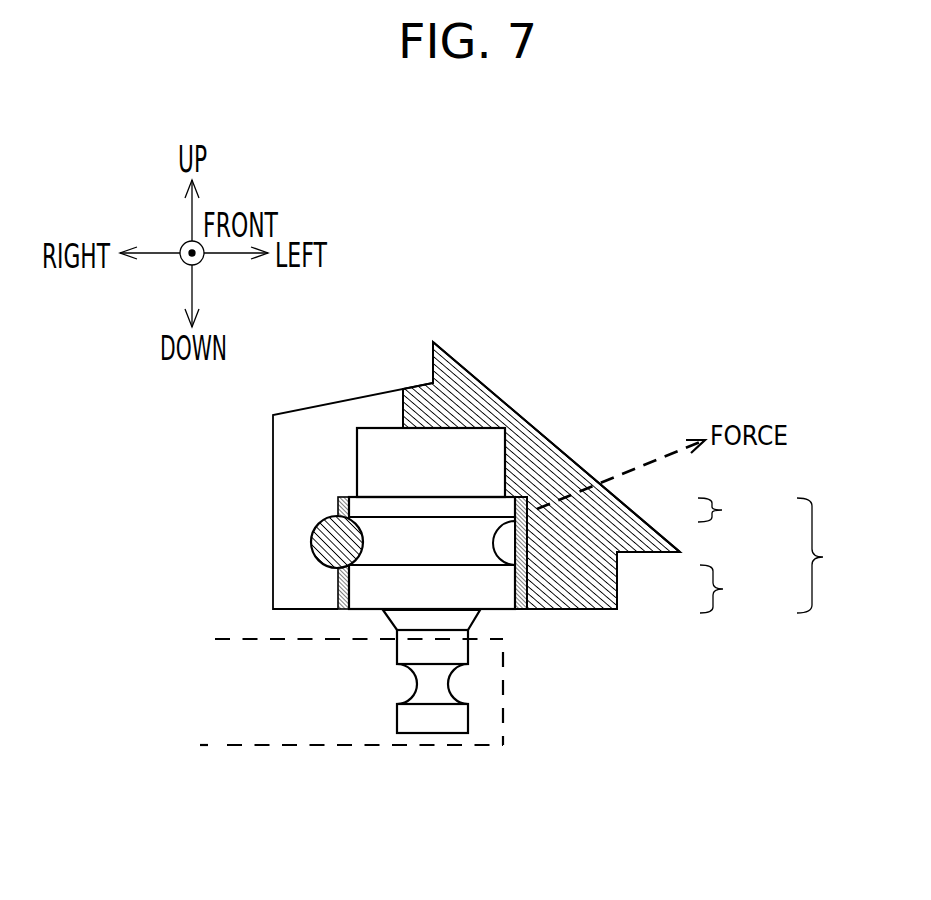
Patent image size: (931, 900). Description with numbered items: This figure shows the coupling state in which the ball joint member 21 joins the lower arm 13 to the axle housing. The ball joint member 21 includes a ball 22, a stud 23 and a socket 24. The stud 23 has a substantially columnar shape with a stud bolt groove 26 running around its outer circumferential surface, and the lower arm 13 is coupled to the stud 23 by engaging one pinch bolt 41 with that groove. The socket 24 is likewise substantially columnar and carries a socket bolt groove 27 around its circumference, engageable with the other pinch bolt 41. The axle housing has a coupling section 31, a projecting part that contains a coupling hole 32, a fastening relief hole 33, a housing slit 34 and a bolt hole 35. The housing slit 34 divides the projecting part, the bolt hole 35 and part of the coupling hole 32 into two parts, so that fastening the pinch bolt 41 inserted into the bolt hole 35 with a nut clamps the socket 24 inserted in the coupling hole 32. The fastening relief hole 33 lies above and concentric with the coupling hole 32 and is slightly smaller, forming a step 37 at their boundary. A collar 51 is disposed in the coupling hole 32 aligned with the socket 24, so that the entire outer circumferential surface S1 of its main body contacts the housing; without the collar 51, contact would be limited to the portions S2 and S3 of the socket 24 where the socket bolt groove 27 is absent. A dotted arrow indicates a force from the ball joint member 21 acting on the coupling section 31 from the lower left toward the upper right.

The lower arm 13 is at (380, 747).
The ball joint member 21 is at (645, 698).
The ball 22 is at (388, 617).
The stud 23 is at (445, 728).
The socket 24 is at (478, 597).
The stud bolt groove 26 is at (445, 687).
The socket bolt groove 27 is at (505, 548).
The coupling section 31 is at (476, 428).
The coupling hole 32 is at (490, 588).
The fastening relief hole 33 is at (484, 457).
The housing slit 34 is at (300, 502).
The bolt hole 35 is at (318, 536).
The step 37 is at (513, 503).
The pinch bolt 41 is at (332, 544).
The collar 51 is at (347, 600).
The outer circumferential surface S1 is at (828, 555).
The contact portion S2 is at (728, 511).
The contact portion S3 is at (729, 589).